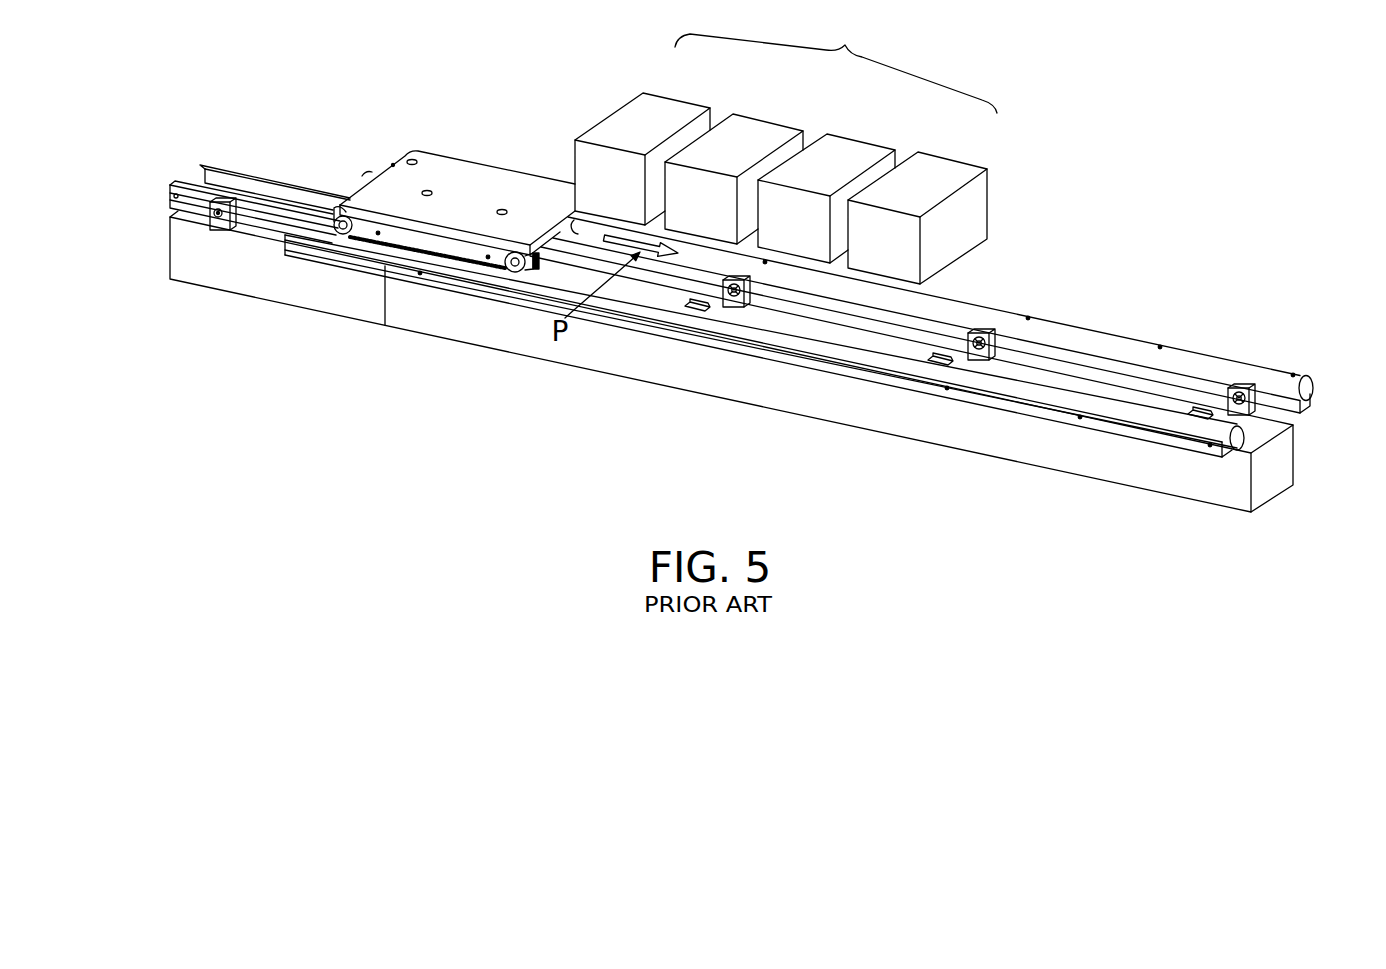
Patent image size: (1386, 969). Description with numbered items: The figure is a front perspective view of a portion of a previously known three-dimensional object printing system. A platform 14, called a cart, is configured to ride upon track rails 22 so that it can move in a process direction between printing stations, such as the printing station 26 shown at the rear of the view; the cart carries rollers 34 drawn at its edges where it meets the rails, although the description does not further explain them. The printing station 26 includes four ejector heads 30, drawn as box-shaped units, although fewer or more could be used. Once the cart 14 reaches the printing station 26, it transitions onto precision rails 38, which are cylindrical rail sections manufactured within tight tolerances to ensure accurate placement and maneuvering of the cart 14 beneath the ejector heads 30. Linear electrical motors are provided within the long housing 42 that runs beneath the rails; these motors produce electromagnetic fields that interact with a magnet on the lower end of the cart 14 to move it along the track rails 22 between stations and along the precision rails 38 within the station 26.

The platform 14 is at (475, 163).
The track rails 22 is at (190, 182).
The printing station 26 is at (845, 45).
The ejector heads 30 is at (740, 115).
The roller 34 is at (342, 217).
The precision rails 38 is at (1079, 335).
The housing 42 is at (1013, 442).